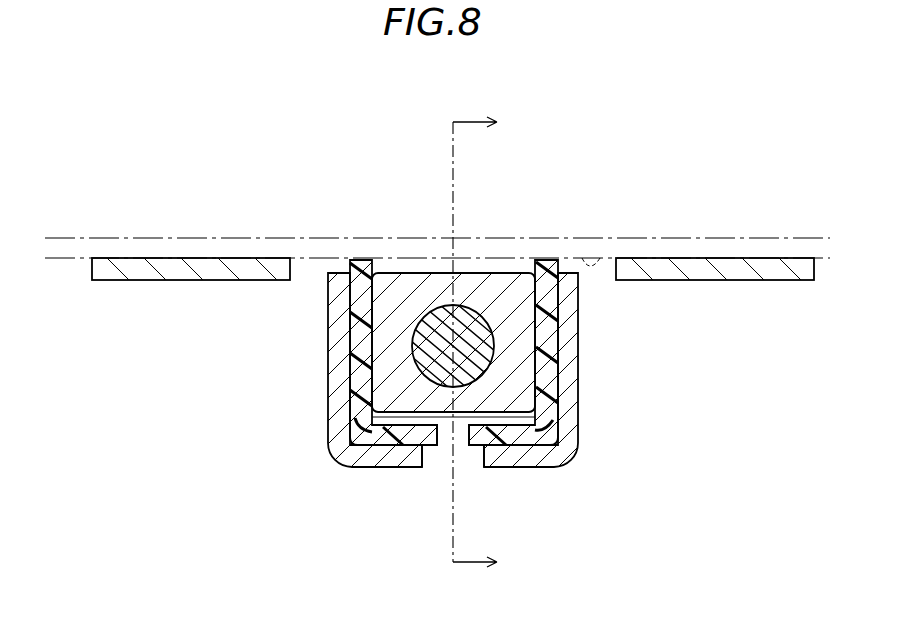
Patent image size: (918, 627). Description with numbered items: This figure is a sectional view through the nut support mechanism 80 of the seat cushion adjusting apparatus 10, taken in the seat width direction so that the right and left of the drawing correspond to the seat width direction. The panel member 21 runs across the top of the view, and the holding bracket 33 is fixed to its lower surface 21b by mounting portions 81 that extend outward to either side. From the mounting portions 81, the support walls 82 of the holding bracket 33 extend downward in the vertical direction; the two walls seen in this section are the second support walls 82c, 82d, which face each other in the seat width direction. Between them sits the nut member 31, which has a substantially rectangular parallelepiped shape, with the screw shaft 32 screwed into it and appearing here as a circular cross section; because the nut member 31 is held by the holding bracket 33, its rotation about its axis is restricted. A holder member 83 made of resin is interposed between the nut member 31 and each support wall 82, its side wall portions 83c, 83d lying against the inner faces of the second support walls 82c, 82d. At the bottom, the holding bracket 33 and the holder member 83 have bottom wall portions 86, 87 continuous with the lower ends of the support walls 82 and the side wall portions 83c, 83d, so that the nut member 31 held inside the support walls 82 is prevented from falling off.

The seat cushion adjusting apparatus 10 is at (97, 143).
The panel member 21 is at (62, 237).
The lower surface 21b is at (592, 258).
The nut member 31 is at (483, 273).
The screw shaft 32 is at (421, 315).
The holding bracket 33 is at (421, 468).
The nut support mechanism 80 is at (284, 476).
The mounting portion 81 is at (177, 281).
The support wall 82 is at (463, 370).
The second support wall 82c is at (340, 390).
The second support wall 82d is at (572, 397).
The holder member 83 is at (471, 450).
The side wall portion 83c is at (360, 320).
The side wall portion 83d is at (550, 308).
The bottom wall portion 86 is at (377, 465).
The bottom wall portion 87 is at (513, 444).